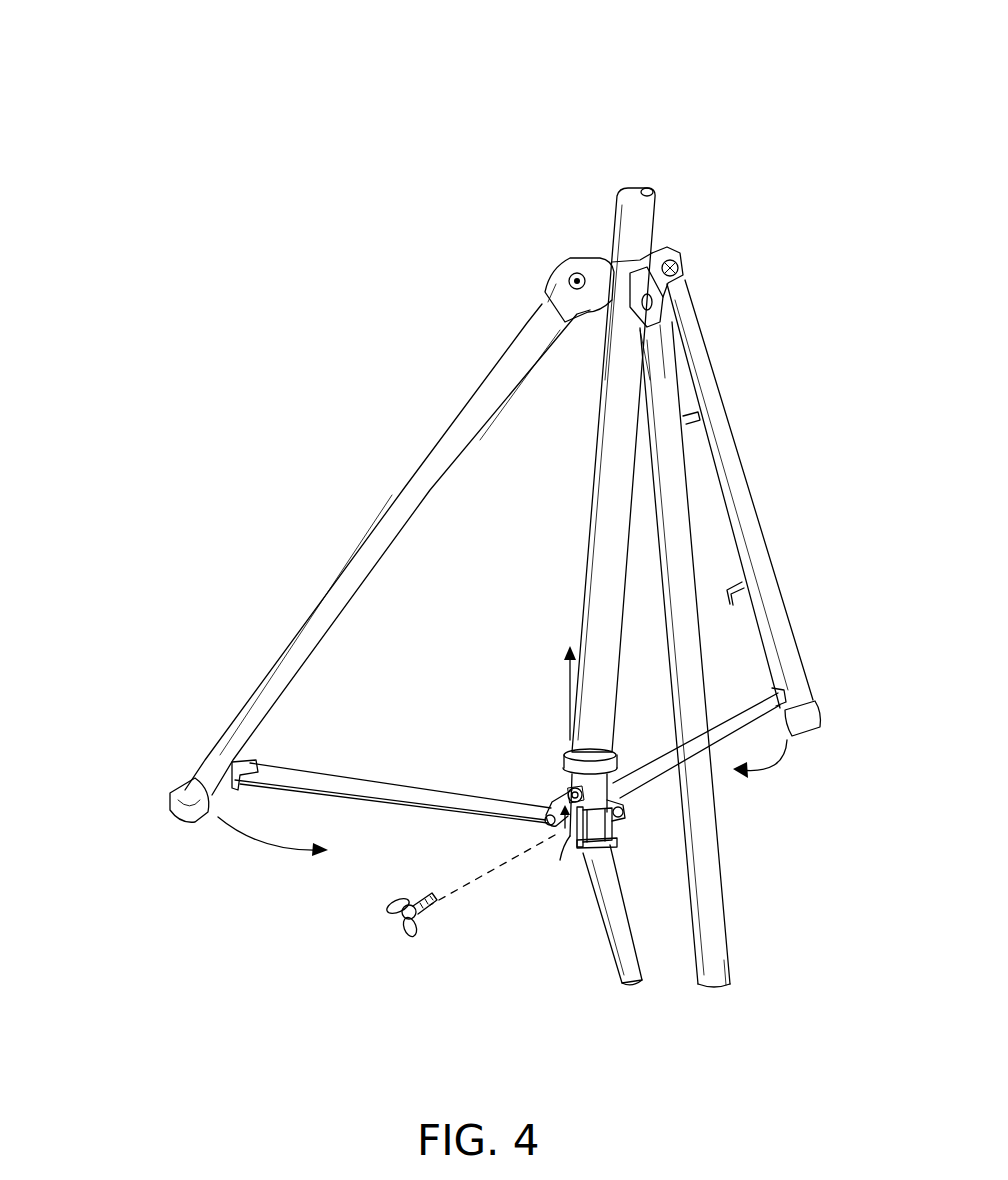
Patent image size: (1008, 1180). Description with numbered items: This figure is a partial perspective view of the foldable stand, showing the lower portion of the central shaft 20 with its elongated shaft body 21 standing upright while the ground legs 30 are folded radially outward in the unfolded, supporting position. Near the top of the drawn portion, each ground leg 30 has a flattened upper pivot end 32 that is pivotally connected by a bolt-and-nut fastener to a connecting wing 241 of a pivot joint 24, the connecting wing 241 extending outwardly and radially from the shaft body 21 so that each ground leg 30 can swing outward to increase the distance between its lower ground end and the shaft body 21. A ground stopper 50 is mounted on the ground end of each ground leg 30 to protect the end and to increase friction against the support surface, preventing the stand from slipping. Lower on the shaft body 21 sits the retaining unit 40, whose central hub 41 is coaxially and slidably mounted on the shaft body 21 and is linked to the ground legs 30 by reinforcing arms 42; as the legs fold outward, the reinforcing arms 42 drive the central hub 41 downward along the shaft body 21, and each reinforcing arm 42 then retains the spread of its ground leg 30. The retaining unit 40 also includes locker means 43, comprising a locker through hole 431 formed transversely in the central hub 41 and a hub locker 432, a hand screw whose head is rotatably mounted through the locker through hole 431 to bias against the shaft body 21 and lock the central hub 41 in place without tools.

The pivot joint 24 is at (463, 128).
The connecting wing 241 is at (603, 262).
The upper pivot end 32 is at (543, 268).
The ground leg 30 is at (415, 490).
The ground stopper 50 is at (185, 800).
The central shaft 20 is at (854, 474).
The shaft body 21 is at (615, 508).
The reinforcing arm 42 is at (405, 790).
The central hub 41 is at (595, 792).
The locker means 43 is at (418, 990).
The locker through hole 431 is at (565, 845).
The hub locker 432 is at (402, 920).
The retaining unit 40 is at (306, 1045).